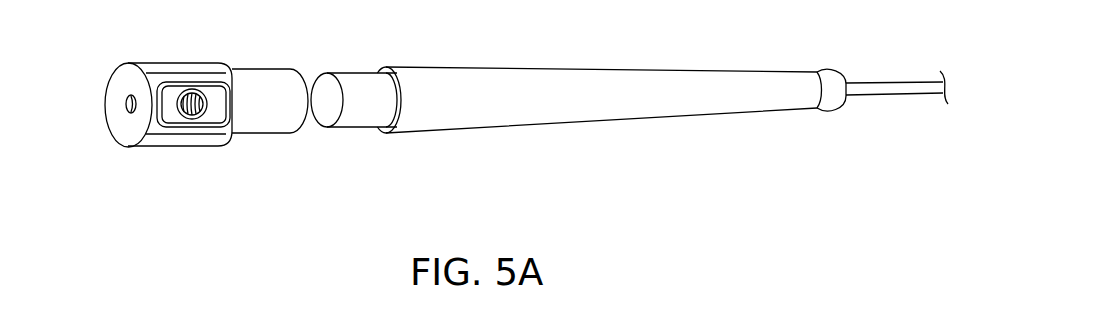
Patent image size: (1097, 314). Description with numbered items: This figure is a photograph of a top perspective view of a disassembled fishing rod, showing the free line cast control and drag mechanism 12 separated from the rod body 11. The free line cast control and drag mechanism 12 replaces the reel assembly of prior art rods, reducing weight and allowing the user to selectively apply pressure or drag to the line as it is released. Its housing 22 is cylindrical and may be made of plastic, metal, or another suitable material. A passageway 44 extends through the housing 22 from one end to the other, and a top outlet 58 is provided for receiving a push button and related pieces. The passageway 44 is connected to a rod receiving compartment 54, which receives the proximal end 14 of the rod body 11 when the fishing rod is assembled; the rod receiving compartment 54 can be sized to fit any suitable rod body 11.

The rod body 11 is at (640, 107).
The free line cast control and drag mechanism 12 is at (185, 143).
The proximal end 14 is at (362, 118).
The housing 22 is at (120, 122).
The passageway 44 is at (125, 103).
The rod receiving compartment 54 is at (264, 123).
The top outlet 58 is at (196, 88).